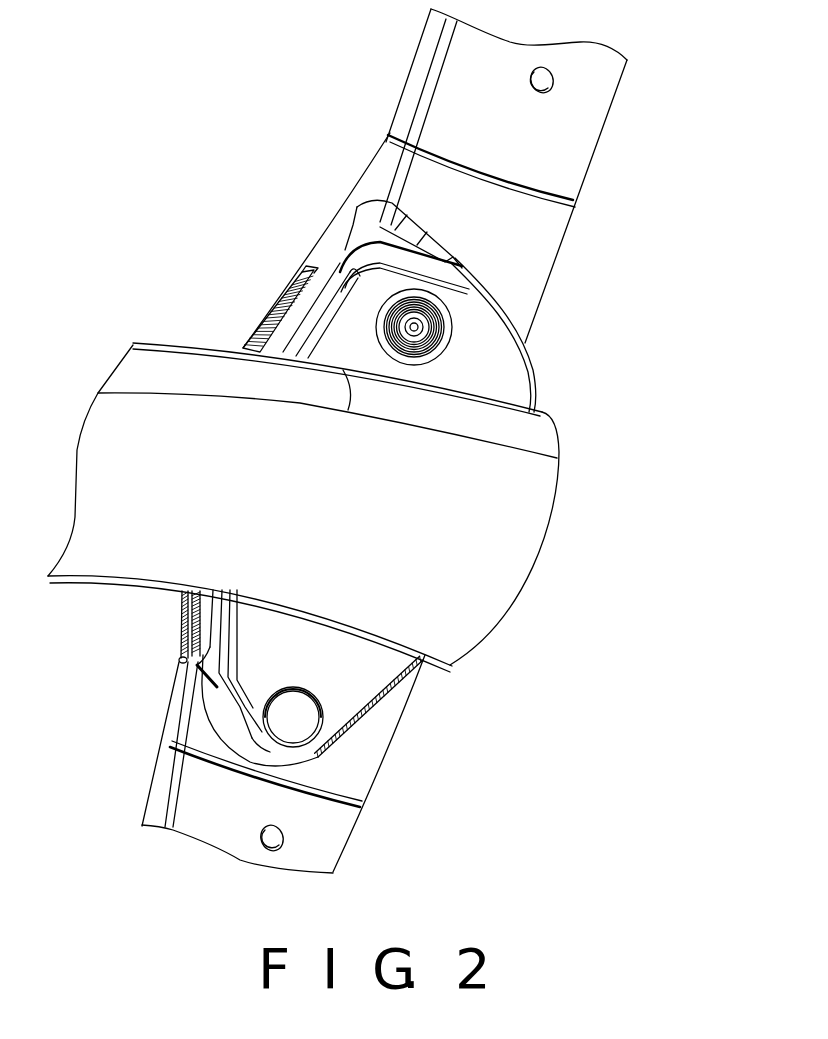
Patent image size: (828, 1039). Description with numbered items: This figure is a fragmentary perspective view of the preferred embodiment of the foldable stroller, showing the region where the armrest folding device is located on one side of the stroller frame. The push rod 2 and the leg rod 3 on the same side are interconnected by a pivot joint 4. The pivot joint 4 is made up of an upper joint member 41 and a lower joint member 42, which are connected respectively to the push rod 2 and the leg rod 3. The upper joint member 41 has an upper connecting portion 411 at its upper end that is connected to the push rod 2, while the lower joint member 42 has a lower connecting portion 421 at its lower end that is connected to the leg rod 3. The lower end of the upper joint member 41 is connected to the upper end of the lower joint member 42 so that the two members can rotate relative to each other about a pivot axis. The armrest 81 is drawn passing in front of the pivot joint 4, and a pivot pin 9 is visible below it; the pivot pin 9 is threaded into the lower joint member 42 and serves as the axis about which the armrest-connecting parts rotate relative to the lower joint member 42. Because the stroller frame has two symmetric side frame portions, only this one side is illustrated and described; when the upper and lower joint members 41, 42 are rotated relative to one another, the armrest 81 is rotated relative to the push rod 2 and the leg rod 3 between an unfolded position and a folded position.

The push rod 2 is at (572, 137).
The leg rod 3 is at (320, 832).
The pivot joint 4 is at (280, 288).
The upper joint member 41 is at (341, 224).
The upper connecting portion 411 is at (427, 183).
The lower joint member 42 is at (273, 314).
The lower connecting portion 421 is at (219, 752).
The armrest 81 is at (167, 403).
The pivot pin 9 is at (305, 718).